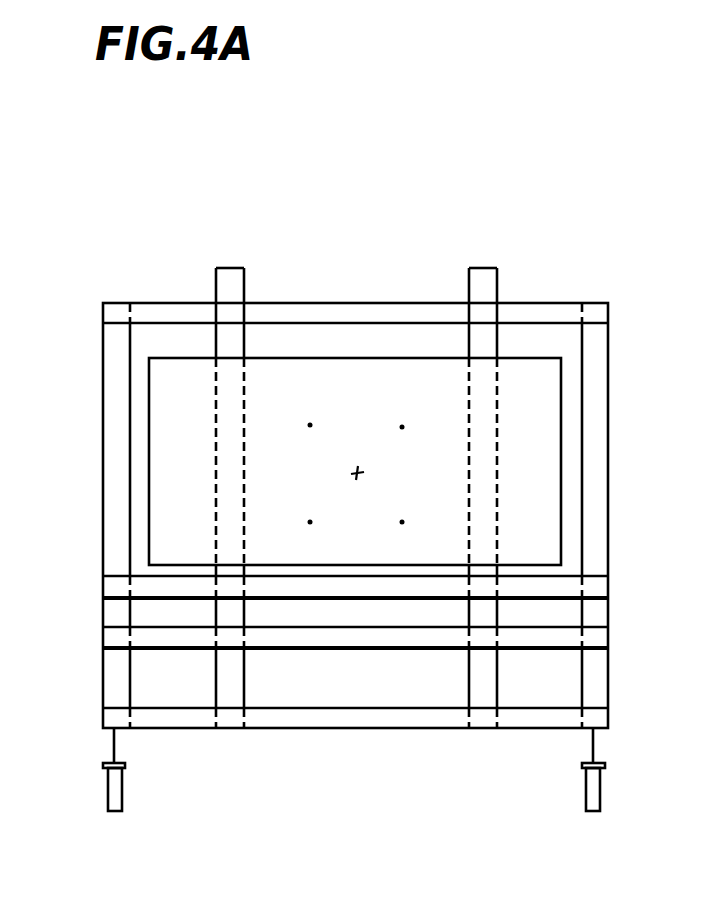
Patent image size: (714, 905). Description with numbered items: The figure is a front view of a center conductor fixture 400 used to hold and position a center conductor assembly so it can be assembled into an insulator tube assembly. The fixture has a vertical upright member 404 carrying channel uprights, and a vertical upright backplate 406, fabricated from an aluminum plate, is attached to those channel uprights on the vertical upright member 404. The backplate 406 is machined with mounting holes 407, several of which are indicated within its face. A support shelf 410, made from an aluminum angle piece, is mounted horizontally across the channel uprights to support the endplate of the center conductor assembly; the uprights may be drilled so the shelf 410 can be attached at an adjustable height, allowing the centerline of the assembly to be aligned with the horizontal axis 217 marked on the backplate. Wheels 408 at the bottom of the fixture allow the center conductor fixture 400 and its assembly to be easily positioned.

The center conductor fixture 400 is at (512, 190).
The vertical upright member 404 is at (608, 402).
The vertical upright backplate 406 is at (547, 494).
The mounting holes 407 is at (402, 427).
The wheels 408 is at (118, 811).
The support shelf 410 is at (607, 636).
The horizontal axis 217 is at (352, 476).